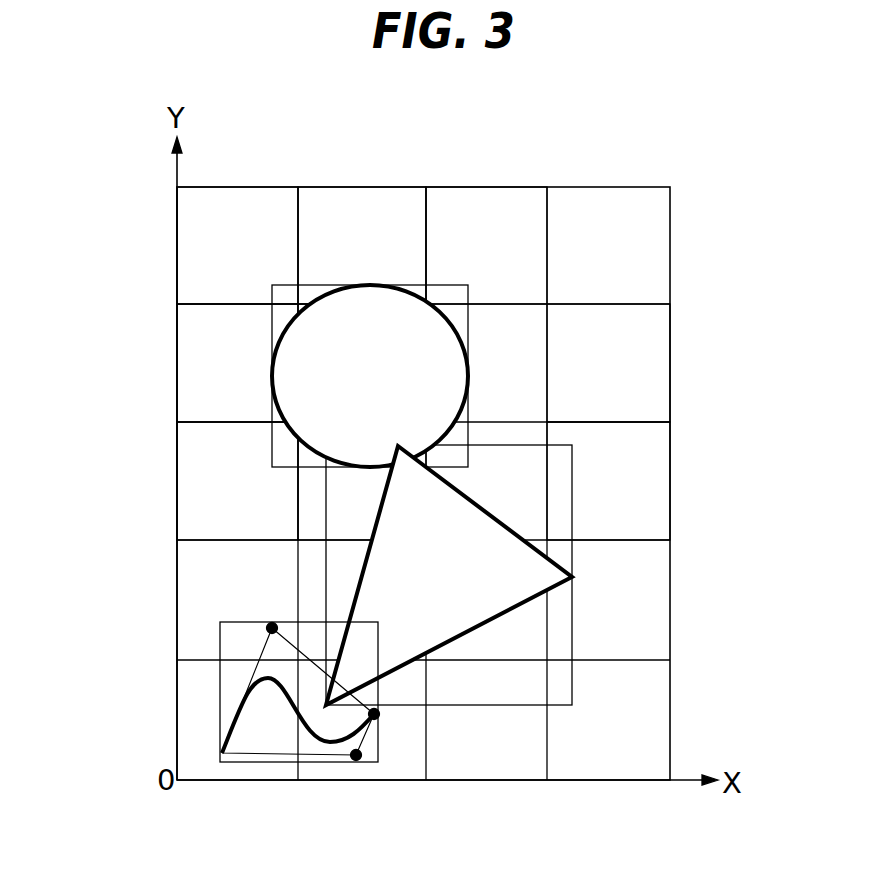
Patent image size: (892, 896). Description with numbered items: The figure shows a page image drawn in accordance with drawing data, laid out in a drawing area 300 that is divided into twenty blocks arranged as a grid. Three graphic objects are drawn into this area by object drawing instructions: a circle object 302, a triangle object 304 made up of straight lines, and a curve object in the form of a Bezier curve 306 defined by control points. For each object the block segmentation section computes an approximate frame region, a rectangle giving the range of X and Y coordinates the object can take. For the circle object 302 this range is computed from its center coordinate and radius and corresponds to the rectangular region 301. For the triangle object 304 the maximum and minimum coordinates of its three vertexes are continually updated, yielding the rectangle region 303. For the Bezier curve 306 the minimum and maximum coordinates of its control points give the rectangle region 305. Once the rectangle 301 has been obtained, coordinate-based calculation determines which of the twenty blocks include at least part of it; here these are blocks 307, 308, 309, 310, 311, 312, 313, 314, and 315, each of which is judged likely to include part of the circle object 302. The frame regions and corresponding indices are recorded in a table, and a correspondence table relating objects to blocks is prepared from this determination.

The drawing area 300 is at (671, 212).
The rectangular region 301 is at (305, 285).
The circle object 302 is at (432, 303).
The rectangle region 303 is at (573, 508).
The triangle object 304 is at (548, 563).
The rectangle region 305 is at (380, 733).
The Bezier curve 306 is at (283, 705).
The block 307 is at (229, 187).
The block 308 is at (381, 187).
The block 309 is at (452, 187).
The block 310 is at (177, 373).
The block 311 is at (300, 306).
The block 312 is at (548, 331).
The block 313 is at (177, 465).
The block 314 is at (298, 520).
The block 315 is at (548, 437).